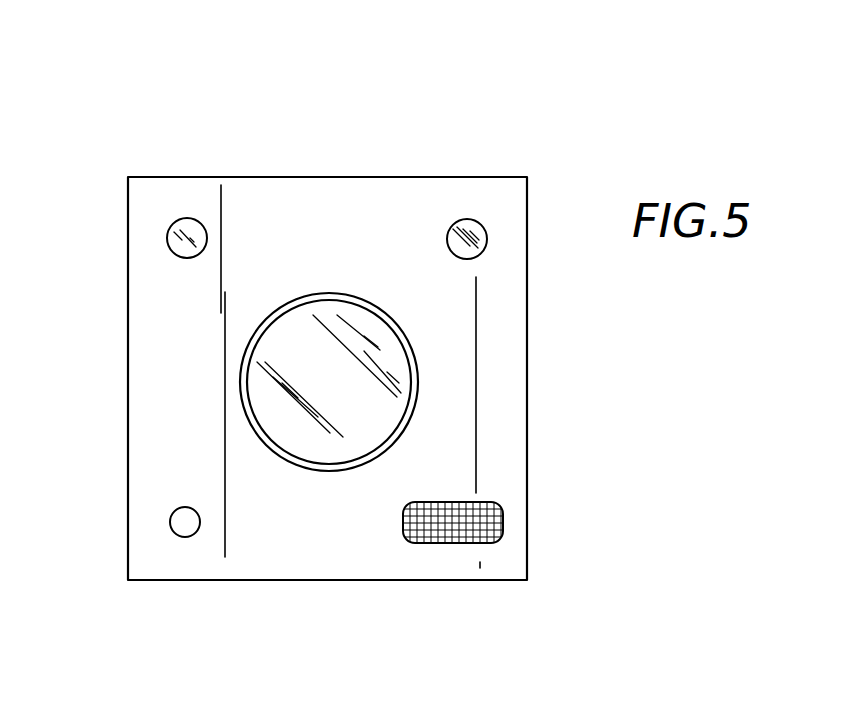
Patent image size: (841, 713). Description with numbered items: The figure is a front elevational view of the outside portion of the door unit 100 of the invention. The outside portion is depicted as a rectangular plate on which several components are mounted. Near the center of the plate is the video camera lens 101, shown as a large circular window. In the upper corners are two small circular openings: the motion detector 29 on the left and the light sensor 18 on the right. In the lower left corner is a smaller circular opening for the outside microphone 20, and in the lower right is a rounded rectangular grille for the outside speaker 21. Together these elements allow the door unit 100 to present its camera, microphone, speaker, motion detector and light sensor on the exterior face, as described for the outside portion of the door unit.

The door unit 100 is at (388, 158).
The video camera lens 101 is at (293, 328).
The motion detector 29 is at (178, 219).
The light sensor 18 is at (481, 230).
The outside microphone 20 is at (182, 537).
The outside speaker 21 is at (498, 528).